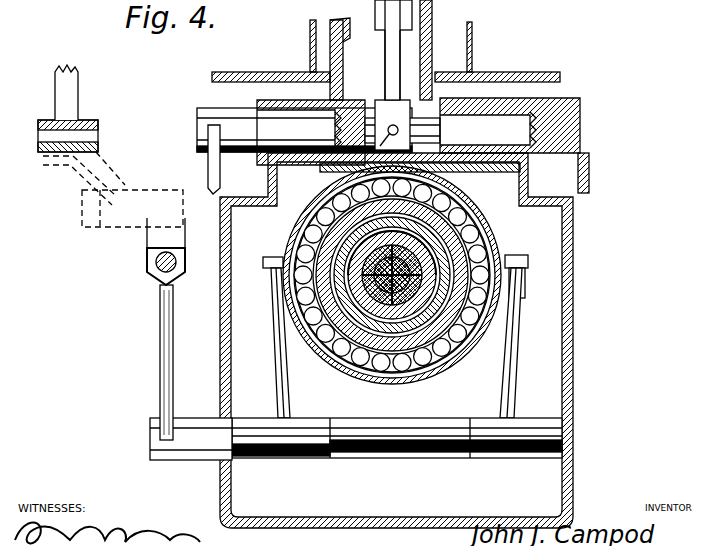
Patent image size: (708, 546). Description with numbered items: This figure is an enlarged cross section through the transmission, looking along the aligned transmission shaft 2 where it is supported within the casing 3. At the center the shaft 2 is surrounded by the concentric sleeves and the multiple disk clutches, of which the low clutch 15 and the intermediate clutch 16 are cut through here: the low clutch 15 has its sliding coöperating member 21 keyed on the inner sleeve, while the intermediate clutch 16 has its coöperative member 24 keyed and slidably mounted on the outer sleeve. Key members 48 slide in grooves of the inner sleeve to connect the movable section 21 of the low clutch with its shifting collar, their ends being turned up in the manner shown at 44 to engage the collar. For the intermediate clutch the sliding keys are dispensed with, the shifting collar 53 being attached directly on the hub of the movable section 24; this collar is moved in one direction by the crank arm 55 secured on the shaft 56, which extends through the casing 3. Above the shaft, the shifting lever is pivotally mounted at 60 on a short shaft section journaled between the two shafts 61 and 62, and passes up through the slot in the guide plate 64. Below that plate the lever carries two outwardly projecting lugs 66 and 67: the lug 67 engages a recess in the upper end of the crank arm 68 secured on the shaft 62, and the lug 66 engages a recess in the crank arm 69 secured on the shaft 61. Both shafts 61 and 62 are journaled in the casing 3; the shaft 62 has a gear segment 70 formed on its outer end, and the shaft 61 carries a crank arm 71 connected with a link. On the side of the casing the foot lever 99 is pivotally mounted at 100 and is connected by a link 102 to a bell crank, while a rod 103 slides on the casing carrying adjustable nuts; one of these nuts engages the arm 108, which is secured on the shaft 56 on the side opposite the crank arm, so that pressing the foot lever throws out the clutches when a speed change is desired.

The transmission shaft 2 is at (385, 268).
The casing 3 is at (575, 288).
The low clutch 15 is at (510, 298).
The intermediate clutch 16 is at (432, 250).
The coöperating member 21 is at (455, 262).
The coöperative member 24 is at (445, 250).
The turned-up end 44 is at (466, 362).
The key members 48 is at (308, 344).
The shifting collar 53 is at (290, 236).
The crank arm 55 is at (286, 372).
The shaft 56 is at (428, 420).
The pivot 60 is at (340, 172).
The shaft 61 is at (262, 105).
The shaft 62 is at (500, 130).
The guide plate 64 is at (472, 48).
The lug 66 is at (382, 30).
The lug 67 is at (415, 30).
The crank arm 68 is at (432, 20).
The crank arm 69 is at (343, 60).
The gear segment 70 is at (589, 170).
The crank arm 71 is at (208, 172).
The foot lever 99 is at (72, 85).
The pivotal point 100 is at (90, 217).
The link 102 is at (93, 162).
The rod 103 is at (152, 280).
The arm 108 is at (162, 372).